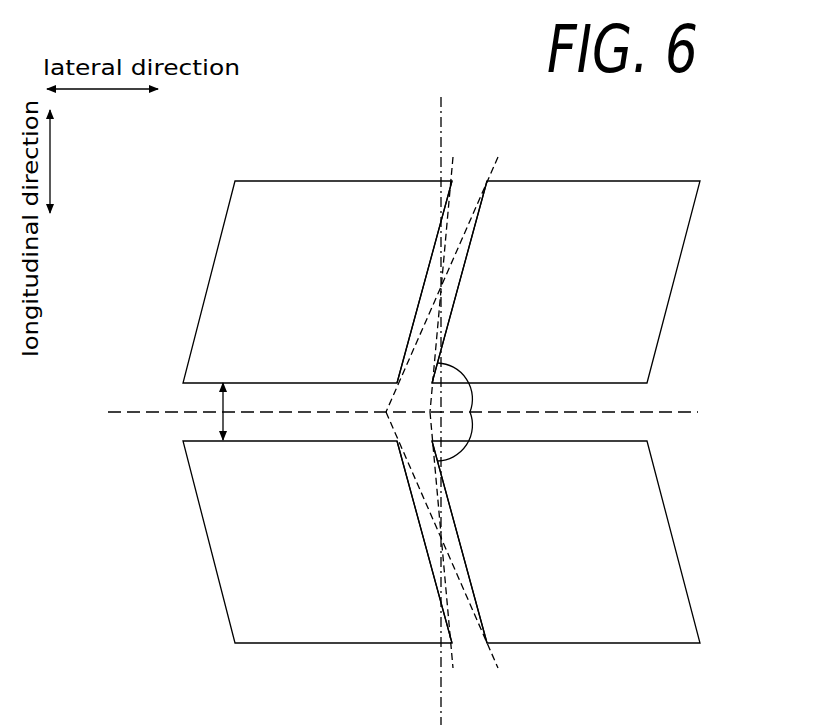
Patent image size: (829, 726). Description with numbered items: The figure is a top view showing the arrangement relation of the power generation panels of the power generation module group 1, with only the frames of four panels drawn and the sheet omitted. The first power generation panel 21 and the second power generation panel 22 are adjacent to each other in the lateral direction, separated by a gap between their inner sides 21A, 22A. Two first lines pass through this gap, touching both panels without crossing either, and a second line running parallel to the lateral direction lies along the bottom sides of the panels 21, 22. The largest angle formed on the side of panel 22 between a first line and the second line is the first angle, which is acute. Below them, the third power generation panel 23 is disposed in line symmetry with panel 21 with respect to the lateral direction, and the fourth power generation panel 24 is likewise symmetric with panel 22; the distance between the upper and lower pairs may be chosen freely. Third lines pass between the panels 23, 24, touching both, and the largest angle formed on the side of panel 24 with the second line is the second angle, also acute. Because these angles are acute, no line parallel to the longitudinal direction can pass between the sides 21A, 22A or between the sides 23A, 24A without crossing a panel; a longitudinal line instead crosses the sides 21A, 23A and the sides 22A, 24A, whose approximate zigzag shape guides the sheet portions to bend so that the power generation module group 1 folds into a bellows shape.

The power generation module group 1 is at (800, 70).
The first power generation panel 21 is at (213, 290).
The side of first power generation panel 21A is at (424, 283).
The second power generation panel 22 is at (667, 291).
The side of second power generation panel 22A is at (459, 283).
The third power generation panel 23 is at (216, 554).
The side of third power generation panel 23A is at (426, 545).
The fourth power generation panel 24 is at (670, 555).
The side of fourth power generation panel 24A is at (459, 546).